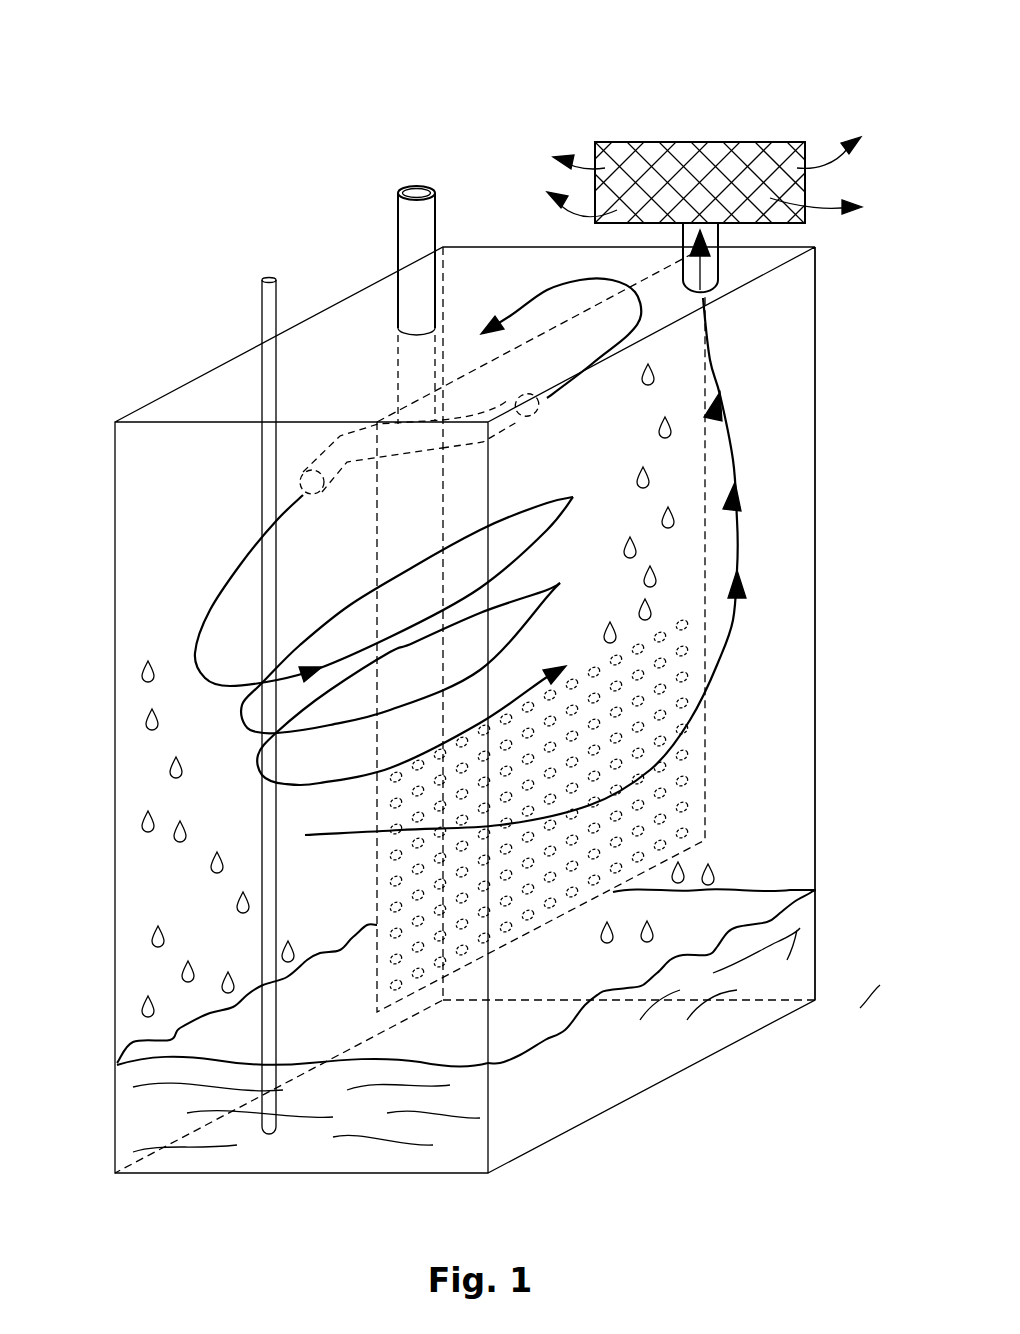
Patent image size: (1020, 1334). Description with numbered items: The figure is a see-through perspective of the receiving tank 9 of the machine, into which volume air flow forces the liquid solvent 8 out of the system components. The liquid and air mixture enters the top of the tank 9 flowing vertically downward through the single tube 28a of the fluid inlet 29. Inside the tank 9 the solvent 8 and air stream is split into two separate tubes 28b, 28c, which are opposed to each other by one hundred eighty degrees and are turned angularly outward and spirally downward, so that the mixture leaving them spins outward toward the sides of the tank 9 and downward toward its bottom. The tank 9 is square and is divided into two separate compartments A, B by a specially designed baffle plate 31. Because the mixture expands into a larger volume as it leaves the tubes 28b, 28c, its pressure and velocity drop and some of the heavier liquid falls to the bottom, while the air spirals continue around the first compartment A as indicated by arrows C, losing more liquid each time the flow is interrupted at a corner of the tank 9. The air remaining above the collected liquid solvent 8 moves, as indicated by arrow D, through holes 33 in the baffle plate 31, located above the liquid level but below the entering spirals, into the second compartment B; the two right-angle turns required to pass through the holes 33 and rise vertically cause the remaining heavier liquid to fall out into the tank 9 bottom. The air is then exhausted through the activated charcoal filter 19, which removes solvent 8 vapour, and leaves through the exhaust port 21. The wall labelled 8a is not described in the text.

The receiving tank 9 is at (538, 72).
The liquid solvent 8 is at (813, 942).
The tank side wall 8a is at (793, 638).
The activated charcoal filter 19 is at (617, 142).
The exhaust port 21 is at (710, 233).
The fluid inlet 29 is at (417, 216).
The single tube 28a is at (410, 292).
The spiralling tube 28b is at (342, 440).
The spiralling tube 28c is at (513, 394).
The baffle plate 31 is at (706, 618).
The holes 33 is at (660, 840).
The first compartment A is at (158, 883).
The second compartment B is at (787, 794).
The arrows indicating spinning air stream C is at (222, 592).
The arrow indicating air flow through baffle holes D is at (728, 430).